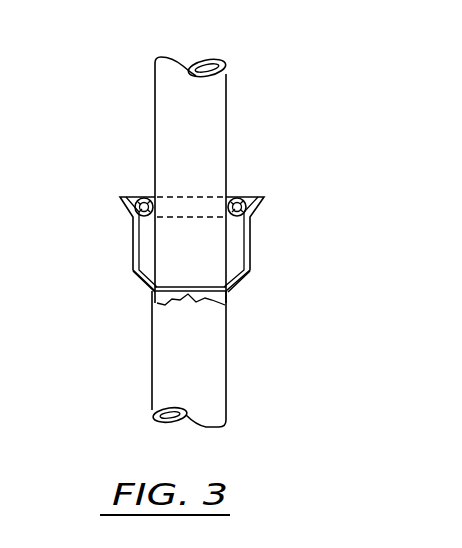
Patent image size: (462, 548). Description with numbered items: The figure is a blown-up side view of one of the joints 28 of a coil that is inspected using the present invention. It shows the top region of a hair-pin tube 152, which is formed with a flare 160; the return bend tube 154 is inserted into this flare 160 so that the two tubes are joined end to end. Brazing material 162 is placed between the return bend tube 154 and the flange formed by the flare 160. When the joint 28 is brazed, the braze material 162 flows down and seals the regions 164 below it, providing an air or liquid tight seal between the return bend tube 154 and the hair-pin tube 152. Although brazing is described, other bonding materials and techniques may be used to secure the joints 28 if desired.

The joint 28 is at (181, 178).
The hair-pin tube 152 is at (220, 372).
The return bend tube 154 is at (218, 99).
The flare 160 is at (132, 238).
The brazing material 162 is at (142, 199).
The sealed regions 164 is at (143, 281).